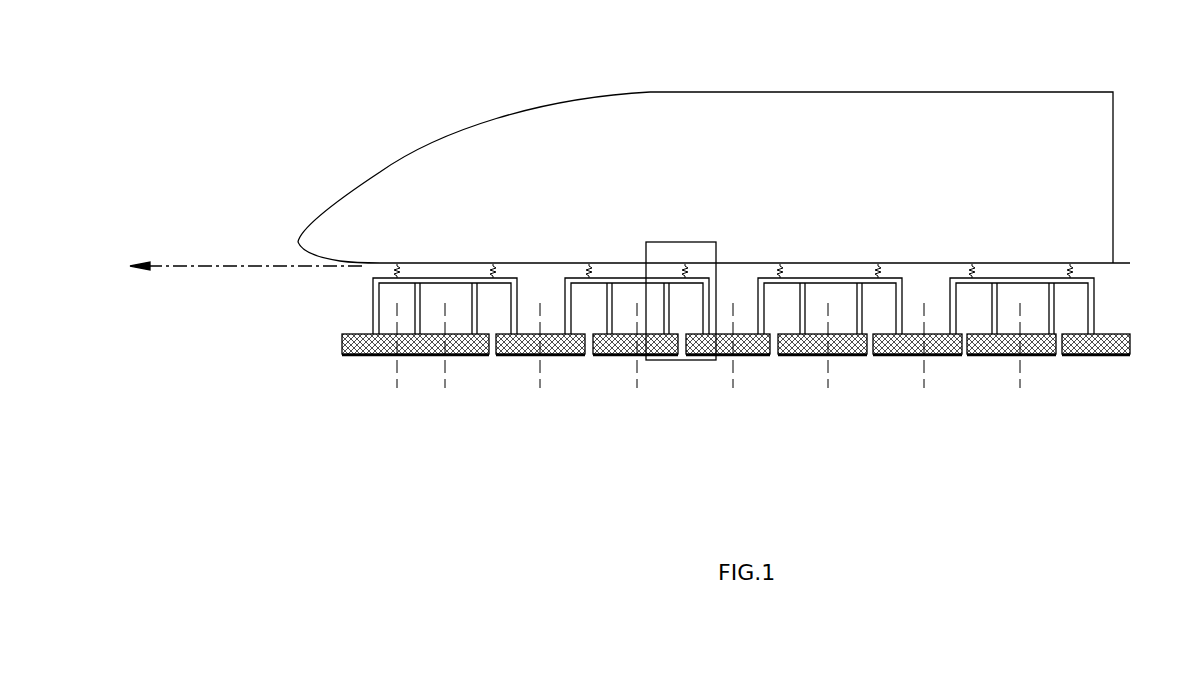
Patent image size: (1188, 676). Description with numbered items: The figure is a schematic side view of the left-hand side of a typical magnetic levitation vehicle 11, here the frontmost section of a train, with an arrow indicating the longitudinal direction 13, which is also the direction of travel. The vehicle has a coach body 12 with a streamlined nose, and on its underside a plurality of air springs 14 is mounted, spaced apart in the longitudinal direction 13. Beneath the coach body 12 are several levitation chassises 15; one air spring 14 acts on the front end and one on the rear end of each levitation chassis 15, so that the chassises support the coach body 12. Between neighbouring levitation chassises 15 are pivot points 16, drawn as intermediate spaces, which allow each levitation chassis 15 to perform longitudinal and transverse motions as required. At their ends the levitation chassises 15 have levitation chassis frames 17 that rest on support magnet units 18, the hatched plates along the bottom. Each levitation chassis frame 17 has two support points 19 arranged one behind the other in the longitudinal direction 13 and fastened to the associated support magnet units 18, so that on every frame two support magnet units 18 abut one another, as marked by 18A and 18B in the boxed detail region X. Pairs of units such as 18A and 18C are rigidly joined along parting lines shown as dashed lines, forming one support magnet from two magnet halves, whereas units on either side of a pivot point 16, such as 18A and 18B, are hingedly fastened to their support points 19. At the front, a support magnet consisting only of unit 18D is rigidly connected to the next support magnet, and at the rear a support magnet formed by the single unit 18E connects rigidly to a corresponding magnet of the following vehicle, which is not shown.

The magnetic levitation vehicle 11 is at (883, 78).
The coach body 12 is at (398, 192).
The longitudinal direction 13 is at (230, 267).
The air spring 14 is at (779, 268).
The levitation chassis 15 is at (624, 279).
The pivot point 16 is at (538, 386).
The levitation chassis frame 17 is at (359, 310).
The support magnet unit 18 is at (462, 356).
The support magnet unit 18A is at (652, 351).
The support magnet unit 18B is at (708, 357).
The support magnet unit 18C is at (605, 356).
The support magnet unit 18D is at (360, 356).
The support magnet unit 18E is at (1098, 352).
The support point 19 is at (988, 303).
The detail region X is at (682, 242).